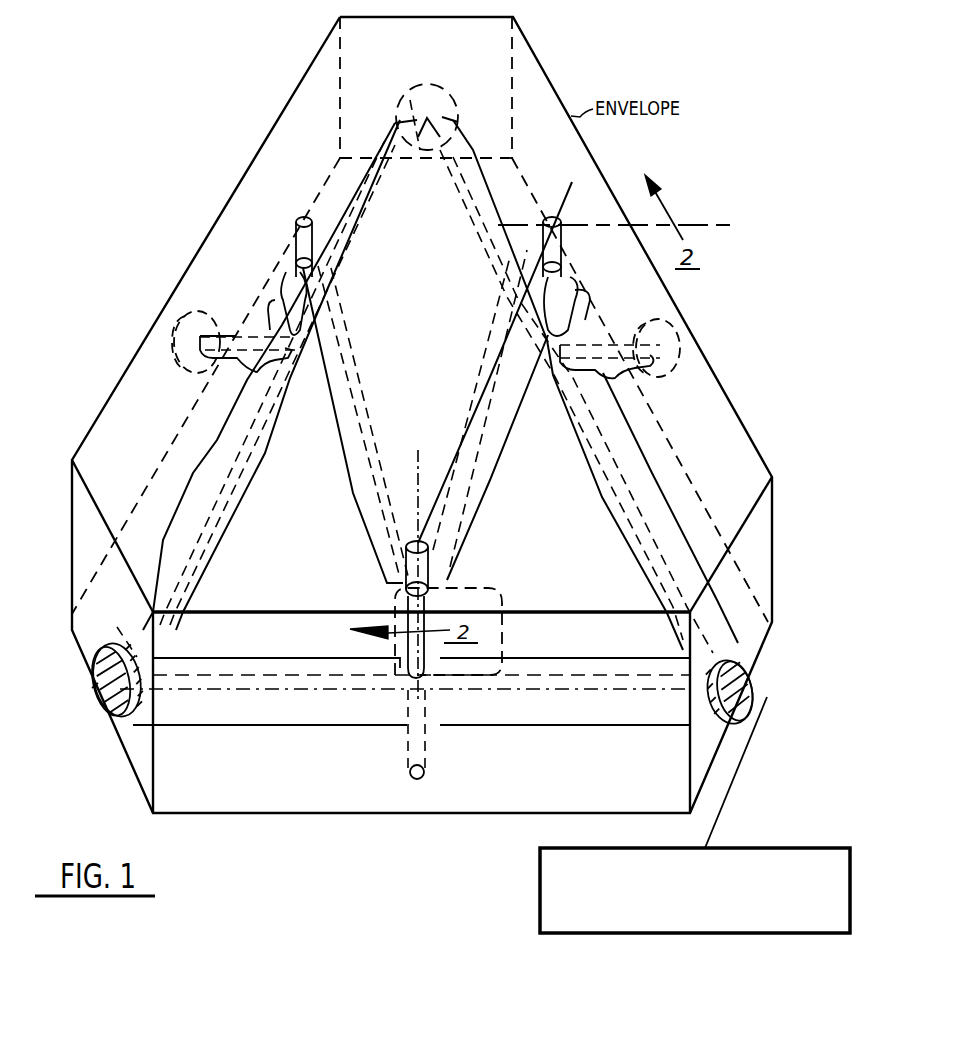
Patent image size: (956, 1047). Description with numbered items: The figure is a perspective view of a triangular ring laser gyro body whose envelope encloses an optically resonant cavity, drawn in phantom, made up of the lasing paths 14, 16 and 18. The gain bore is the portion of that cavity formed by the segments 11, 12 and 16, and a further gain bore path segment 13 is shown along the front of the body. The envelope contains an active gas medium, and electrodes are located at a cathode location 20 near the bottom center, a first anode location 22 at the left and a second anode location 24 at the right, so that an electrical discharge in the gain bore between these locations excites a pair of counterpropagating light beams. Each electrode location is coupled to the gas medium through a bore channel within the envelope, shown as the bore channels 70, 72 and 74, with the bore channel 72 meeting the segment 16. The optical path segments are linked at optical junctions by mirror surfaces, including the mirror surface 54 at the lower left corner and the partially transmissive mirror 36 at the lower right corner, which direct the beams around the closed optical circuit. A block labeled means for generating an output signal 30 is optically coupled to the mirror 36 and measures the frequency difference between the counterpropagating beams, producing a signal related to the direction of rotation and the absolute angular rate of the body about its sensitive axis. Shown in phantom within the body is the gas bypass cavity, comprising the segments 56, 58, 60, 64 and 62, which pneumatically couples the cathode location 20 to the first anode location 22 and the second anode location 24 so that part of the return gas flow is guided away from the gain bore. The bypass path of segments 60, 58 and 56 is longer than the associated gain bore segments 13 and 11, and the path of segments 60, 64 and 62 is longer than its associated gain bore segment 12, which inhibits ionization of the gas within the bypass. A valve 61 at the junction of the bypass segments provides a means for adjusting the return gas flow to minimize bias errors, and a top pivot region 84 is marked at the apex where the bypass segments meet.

The gain bore segment 11 is at (271, 375).
The gain bore segment 12 is at (568, 385).
The gain bore path segment 13 is at (276, 645).
The lasing path 14 is at (434, 547).
The lasing path 16 is at (411, 743).
The lasing path 18 is at (670, 508).
The cathode location 20 is at (424, 776).
The anode 1 location 22 is at (148, 328).
The anode 2 location 24 is at (674, 328).
The means for generating an output signal 30 is at (548, 883).
The partially transmissive mirror 36 is at (737, 683).
The mirror surface 54 is at (95, 700).
The gas bypass cavity segment 56 is at (286, 320).
The gas bypass cavity segment 58 is at (356, 424).
The gas bypass cavity segment 60 is at (466, 631).
The valve 61 is at (385, 618).
The gas bypass cavity segment 62 is at (585, 303).
The gas bypass cavity segment 64 is at (495, 381).
The bore channel 70 is at (250, 365).
The bore channel 72 is at (440, 697).
The bore channel 74 is at (606, 372).
The apex pivot 84 is at (423, 97).